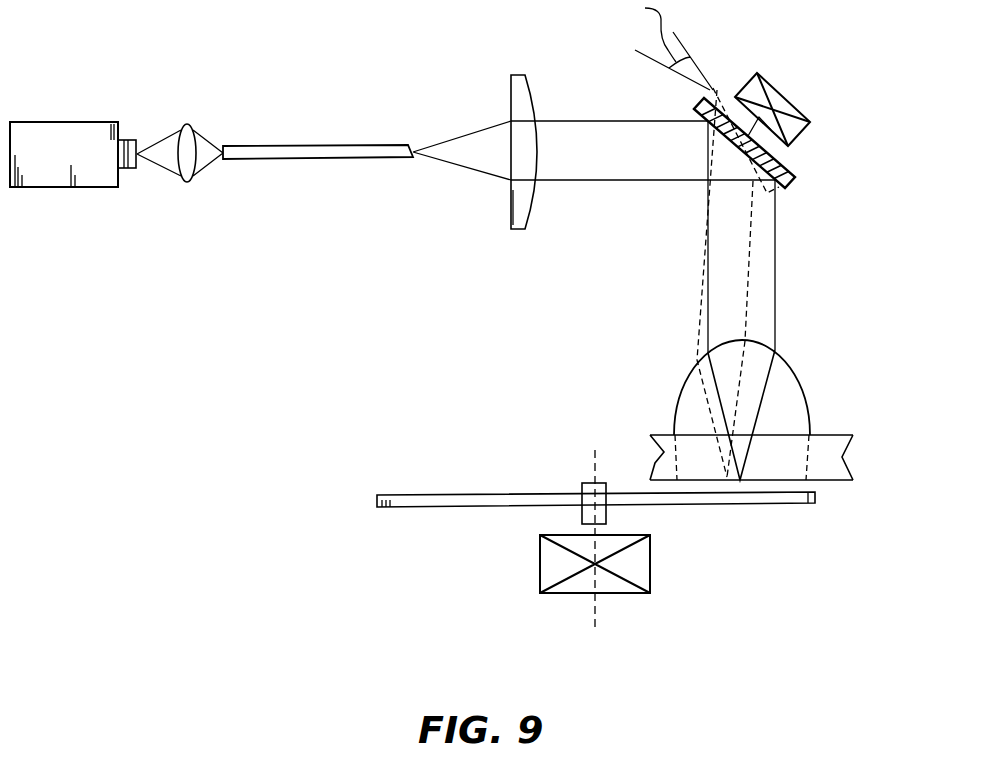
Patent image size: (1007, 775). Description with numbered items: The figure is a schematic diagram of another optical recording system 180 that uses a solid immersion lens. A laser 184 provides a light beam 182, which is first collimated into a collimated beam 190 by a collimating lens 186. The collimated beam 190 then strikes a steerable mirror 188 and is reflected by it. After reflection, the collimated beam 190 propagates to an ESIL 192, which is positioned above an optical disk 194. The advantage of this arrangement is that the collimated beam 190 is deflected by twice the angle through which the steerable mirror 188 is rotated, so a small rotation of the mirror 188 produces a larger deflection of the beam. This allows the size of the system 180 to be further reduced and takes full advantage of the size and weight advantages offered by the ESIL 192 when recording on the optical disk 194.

The optical recording system 180 is at (214, 398).
The light beam 182 is at (165, 162).
The laser 184 is at (80, 122).
The collimating lens 186 is at (517, 229).
The steerable mirror 188 is at (793, 178).
The collimated beam 190 is at (590, 181).
The ESIL 192 is at (682, 410).
The optical disk 194 is at (428, 492).